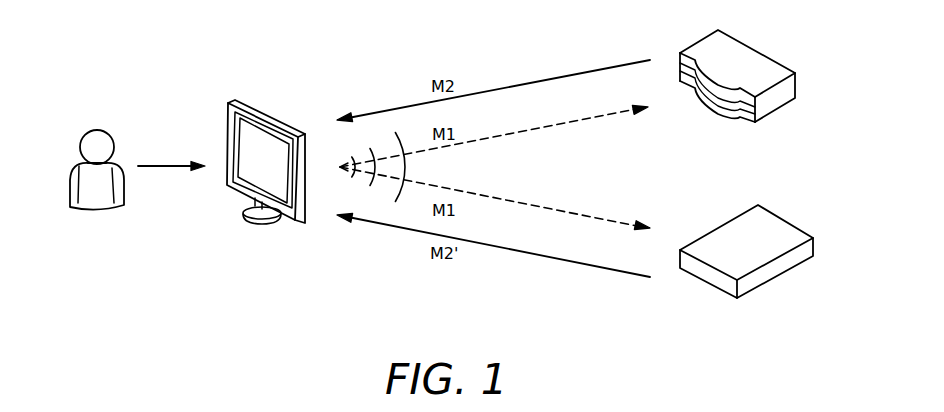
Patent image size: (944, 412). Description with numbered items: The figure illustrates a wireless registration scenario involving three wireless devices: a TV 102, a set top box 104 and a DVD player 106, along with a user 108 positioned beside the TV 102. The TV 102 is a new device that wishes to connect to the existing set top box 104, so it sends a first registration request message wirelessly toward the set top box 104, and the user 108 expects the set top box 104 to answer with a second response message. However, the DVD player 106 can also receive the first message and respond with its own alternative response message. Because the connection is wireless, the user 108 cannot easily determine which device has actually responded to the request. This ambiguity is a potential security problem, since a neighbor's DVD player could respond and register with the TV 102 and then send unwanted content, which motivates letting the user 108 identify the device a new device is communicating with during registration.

The TV 102 is at (270, 115).
The set top box 104 is at (755, 50).
The DVD player 106 is at (787, 222).
The user 108 is at (98, 128).